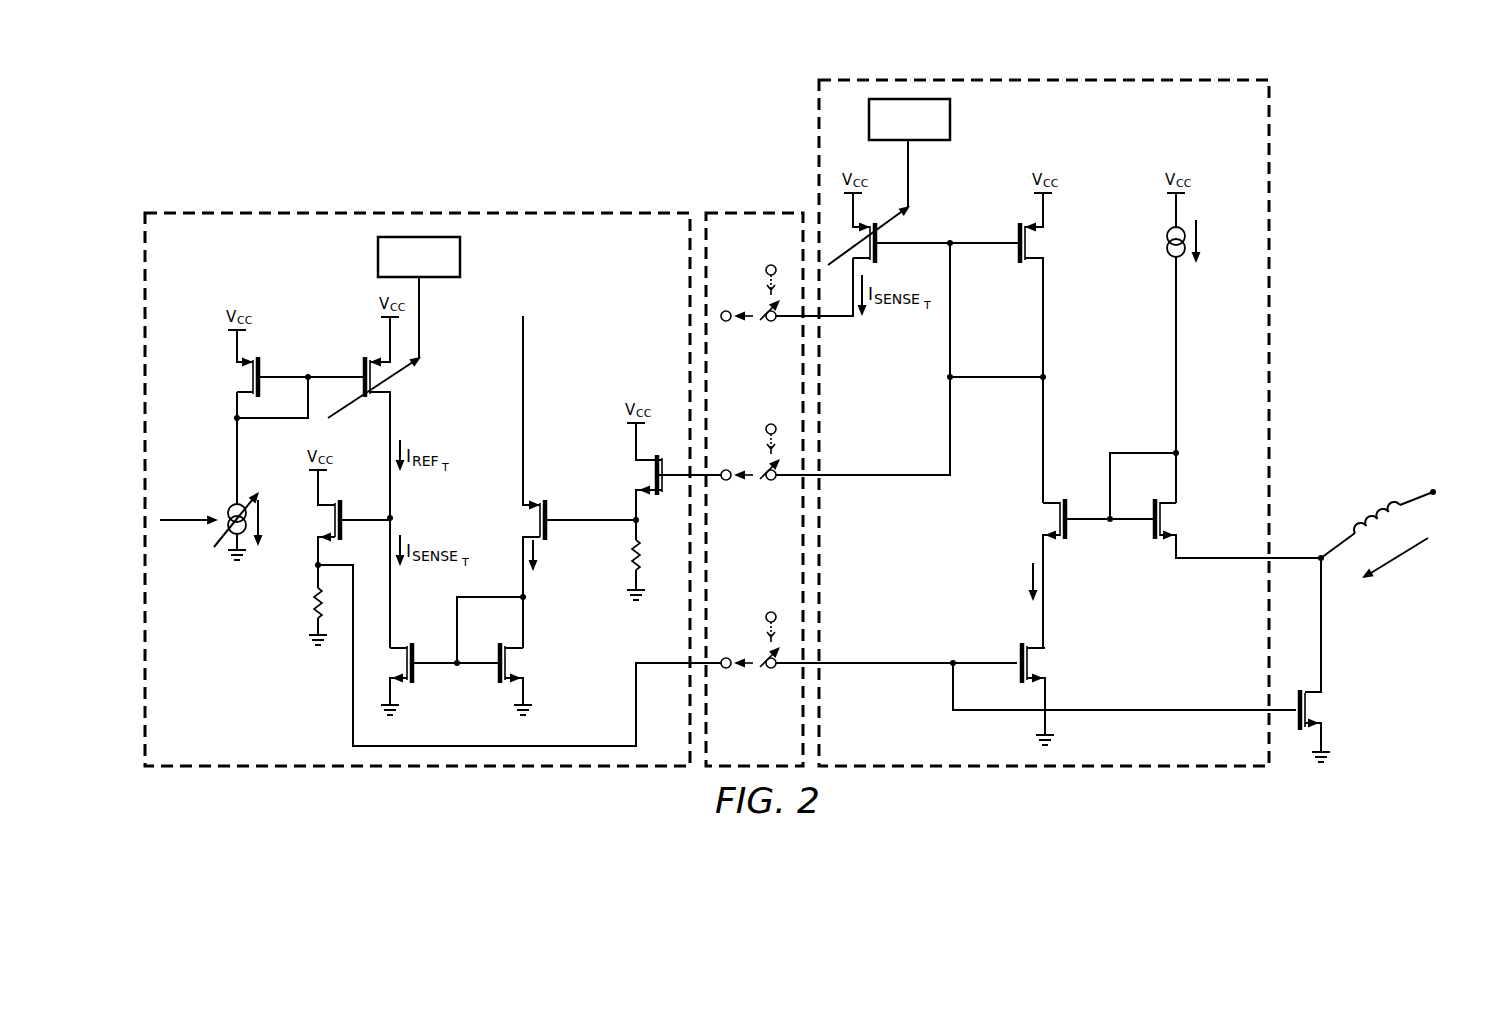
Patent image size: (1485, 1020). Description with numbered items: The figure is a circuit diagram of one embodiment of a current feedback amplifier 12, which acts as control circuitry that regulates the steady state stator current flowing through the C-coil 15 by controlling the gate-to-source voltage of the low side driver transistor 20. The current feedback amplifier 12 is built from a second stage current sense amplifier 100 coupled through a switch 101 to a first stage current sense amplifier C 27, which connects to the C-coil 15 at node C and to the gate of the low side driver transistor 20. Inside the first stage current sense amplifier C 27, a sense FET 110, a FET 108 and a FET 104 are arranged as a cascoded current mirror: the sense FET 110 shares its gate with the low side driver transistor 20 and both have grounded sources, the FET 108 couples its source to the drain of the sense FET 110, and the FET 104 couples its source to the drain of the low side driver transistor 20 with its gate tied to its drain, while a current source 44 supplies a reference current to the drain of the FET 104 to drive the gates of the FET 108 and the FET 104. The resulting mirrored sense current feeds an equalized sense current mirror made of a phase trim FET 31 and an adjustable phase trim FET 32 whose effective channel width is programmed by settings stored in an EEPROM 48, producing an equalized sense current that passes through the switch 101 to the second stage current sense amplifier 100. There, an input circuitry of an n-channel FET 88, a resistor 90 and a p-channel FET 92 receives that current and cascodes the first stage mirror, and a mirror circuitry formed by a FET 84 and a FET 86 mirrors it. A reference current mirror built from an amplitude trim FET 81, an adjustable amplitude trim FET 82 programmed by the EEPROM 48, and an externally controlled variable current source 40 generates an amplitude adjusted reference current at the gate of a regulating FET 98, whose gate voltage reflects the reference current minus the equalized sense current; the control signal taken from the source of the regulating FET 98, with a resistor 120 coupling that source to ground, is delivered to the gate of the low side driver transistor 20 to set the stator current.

The current feedback amplifier 12 is at (444, 93).
The first stage current sense amplifier C 27 is at (1222, 80).
The second stage current sense amplifier 100 is at (216, 213).
The switch 101 is at (726, 213).
The EEPROM 48 is at (462, 250).
The amplitude trim FET 81 is at (262, 370).
The adjustable amplitude trim FET 82 is at (350, 367).
The variable current source 40 is at (231, 504).
The regulating FET 98 is at (344, 508).
The resistor 120 is at (312, 602).
The p-channel FET 92 is at (552, 509).
The resistor 90 is at (632, 556).
The n-channel FET 88 is at (660, 522).
The FET 86 is at (414, 688).
The FET 84 is at (498, 688).
The adjustable phase trim FET 32 is at (884, 236).
The phase trim FET 31 is at (1013, 256).
The current source 44 is at (1164, 248).
The FET 108 is at (1066, 539).
The FET 104 is at (1156, 539).
The sense FET 110 is at (1014, 655).
The LSDC 20 is at (1290, 727).
The C-coil 15 is at (1370, 520).